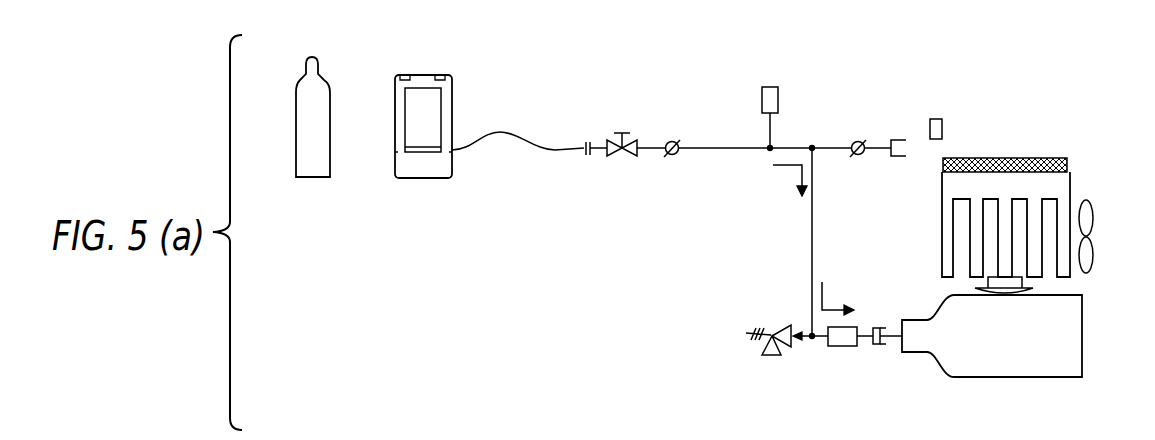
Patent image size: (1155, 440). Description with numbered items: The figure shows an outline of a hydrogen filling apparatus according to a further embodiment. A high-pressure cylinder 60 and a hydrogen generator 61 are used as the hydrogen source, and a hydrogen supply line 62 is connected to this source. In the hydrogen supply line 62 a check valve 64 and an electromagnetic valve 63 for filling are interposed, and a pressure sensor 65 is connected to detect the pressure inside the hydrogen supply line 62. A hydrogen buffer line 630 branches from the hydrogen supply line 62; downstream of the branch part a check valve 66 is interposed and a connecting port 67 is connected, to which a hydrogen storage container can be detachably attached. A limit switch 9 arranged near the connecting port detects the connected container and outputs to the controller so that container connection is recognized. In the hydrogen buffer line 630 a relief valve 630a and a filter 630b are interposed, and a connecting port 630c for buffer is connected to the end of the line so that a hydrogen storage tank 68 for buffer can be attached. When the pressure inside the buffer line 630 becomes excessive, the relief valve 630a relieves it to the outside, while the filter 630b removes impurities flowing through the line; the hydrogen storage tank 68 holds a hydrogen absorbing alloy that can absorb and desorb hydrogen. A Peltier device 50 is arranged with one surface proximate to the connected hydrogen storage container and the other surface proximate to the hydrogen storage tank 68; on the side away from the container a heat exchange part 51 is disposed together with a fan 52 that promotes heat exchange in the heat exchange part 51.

The high-pressure cylinder 60 is at (314, 178).
The hydrogen generator 61 is at (421, 178).
The hydrogen supply line 62 is at (532, 149).
The electromagnetic valve for filling 63 is at (604, 140).
The check valve 64 is at (668, 155).
The pressure sensor 65 is at (760, 94).
The check valve 66 is at (853, 156).
The connecting port 67 is at (906, 138).
The limit switch 9 is at (944, 126).
The Peltier device 50 is at (1067, 165).
The heat exchange part 51 is at (942, 240).
The fan 52 is at (1093, 255).
The hydrogen storage tank for buffer 68 is at (1018, 377).
The hydrogen buffer line 630 is at (810, 247).
The relief valve 630a is at (770, 356).
The filter 630b is at (842, 347).
The connecting port for buffer 630c is at (881, 326).